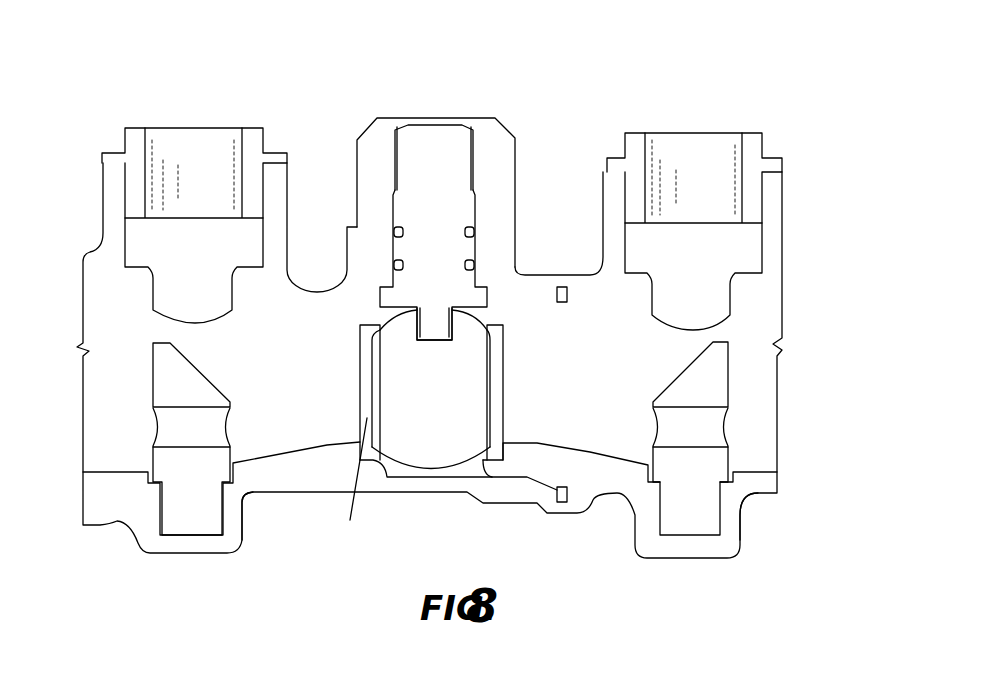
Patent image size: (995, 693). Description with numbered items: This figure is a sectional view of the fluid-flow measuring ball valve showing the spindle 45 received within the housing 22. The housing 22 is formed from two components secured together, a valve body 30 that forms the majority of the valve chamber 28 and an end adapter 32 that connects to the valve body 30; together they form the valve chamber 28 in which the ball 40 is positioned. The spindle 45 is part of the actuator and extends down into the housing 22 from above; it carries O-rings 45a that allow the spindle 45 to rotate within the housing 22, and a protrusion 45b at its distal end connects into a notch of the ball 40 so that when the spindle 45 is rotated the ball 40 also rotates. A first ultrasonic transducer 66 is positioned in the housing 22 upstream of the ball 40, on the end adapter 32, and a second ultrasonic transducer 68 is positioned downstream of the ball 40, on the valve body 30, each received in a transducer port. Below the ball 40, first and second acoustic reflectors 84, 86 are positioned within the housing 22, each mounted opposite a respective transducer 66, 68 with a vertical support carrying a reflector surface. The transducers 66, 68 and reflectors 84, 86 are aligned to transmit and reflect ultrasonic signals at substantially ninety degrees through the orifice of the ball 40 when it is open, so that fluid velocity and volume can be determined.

The housing 22 is at (794, 92).
The valve chamber 28 is at (353, 488).
The valve body 30 is at (247, 495).
The end adapter 32 is at (747, 503).
The ball 40 is at (448, 405).
The spindle 45 is at (453, 145).
The O-rings 45a is at (475, 264).
The protrusion 45b is at (437, 328).
The first ultrasonic transducer 66 is at (735, 253).
The second ultrasonic transducer 68 is at (140, 242).
The first acoustic reflector 84 is at (732, 423).
The second acoustic reflector 86 is at (146, 428).